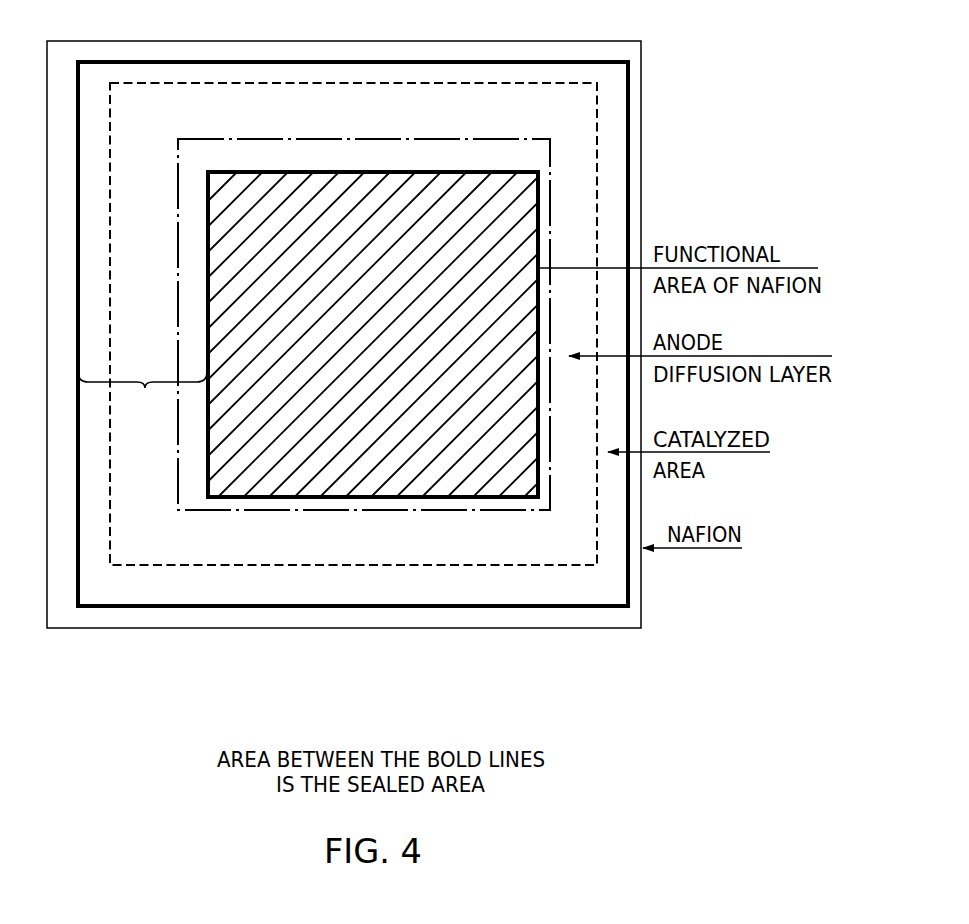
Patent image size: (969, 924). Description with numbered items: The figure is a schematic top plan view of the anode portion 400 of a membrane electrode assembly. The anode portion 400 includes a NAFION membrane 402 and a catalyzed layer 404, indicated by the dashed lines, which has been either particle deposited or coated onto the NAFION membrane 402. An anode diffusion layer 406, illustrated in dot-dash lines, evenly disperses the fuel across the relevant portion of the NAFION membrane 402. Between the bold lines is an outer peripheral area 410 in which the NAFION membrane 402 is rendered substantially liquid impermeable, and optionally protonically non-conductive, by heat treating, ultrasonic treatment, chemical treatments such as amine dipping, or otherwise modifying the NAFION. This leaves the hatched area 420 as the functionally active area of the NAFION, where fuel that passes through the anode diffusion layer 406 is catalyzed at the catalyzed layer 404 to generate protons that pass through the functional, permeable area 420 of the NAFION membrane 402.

The anode portion 400 is at (113, 22).
The NAFION membrane 402 is at (652, 627).
The catalyzed layer 404 is at (428, 542).
The anode diffusion layer 406 is at (313, 512).
The outer peripheral area 410 is at (142, 396).
The functionally active area 420 is at (502, 220).